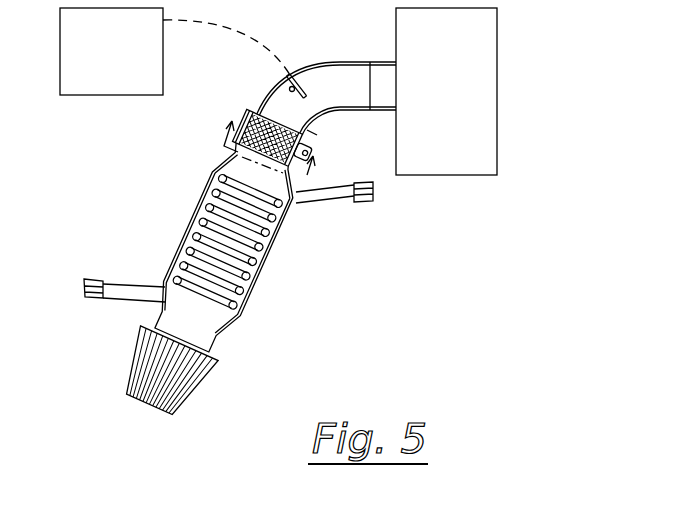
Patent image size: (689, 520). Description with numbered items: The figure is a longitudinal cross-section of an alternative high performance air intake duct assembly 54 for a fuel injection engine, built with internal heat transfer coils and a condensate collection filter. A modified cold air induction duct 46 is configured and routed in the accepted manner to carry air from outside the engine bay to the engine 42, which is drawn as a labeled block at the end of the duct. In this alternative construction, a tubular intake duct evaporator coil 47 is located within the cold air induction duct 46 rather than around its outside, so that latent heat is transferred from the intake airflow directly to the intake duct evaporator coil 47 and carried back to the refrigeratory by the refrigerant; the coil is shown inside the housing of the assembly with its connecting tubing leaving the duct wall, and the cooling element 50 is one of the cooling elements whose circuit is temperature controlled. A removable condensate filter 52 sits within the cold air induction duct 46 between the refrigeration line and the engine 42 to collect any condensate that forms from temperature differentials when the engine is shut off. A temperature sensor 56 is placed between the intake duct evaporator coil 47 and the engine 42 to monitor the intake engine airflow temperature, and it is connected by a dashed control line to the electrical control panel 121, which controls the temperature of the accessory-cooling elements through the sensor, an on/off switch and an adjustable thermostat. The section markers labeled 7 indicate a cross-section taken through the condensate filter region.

The engine 42 is at (460, 48).
The cold air induction duct 46 is at (348, 62).
The intake duct evaporator coil 47 is at (128, 290).
The insulating material 50 is at (198, 200).
The condensate filter 52 is at (273, 118).
The intake duct assembly 54 is at (287, 272).
The temperature sensor 56 is at (307, 70).
The electrical control panel 121 is at (78, 95).
The section line 7- 7 is at (265, 153).